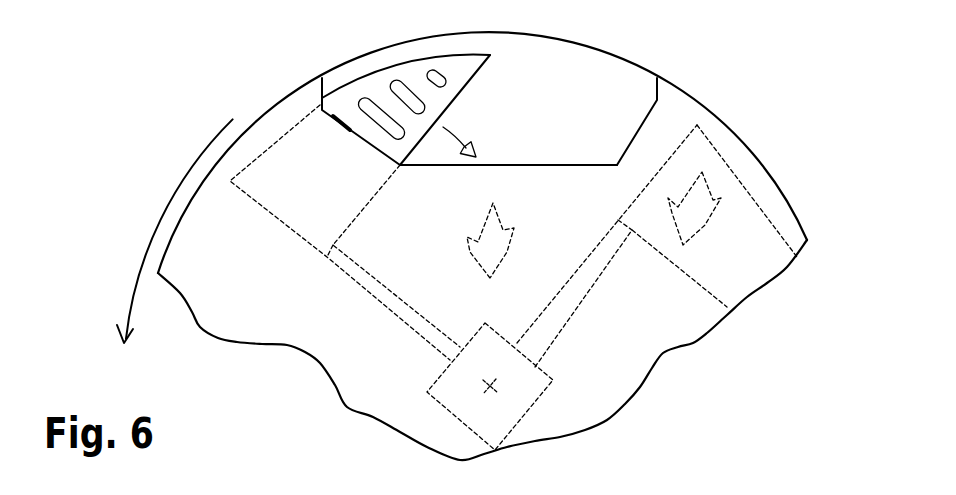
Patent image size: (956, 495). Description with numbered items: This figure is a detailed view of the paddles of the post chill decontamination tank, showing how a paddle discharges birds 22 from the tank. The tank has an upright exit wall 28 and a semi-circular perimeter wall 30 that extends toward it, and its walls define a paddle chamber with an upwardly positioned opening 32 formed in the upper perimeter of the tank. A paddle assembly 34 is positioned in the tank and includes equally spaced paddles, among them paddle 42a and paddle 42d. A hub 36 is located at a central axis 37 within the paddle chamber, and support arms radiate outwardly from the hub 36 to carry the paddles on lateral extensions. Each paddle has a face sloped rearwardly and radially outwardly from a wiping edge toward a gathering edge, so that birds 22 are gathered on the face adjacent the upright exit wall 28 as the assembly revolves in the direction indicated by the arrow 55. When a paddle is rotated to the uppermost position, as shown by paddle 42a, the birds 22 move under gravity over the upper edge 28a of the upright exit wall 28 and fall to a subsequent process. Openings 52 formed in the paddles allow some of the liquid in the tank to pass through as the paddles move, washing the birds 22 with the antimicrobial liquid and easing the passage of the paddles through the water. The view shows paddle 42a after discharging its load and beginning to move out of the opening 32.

The birds 22 is at (502, 240).
The upright exit wall 28 is at (657, 333).
The upper edge of the upright exit wall 28a is at (557, 164).
The semi-circular perimeter wall 30 is at (778, 186).
The upwardly positioned opening 32 is at (585, 90).
The paddle assembly 34 is at (364, 315).
The hub 36 is at (540, 367).
The central axis 37 is at (492, 387).
The paddle 42a is at (363, 87).
The paddle 42d is at (710, 137).
The openings 52 is at (362, 103).
The arrow 55 is at (155, 216).